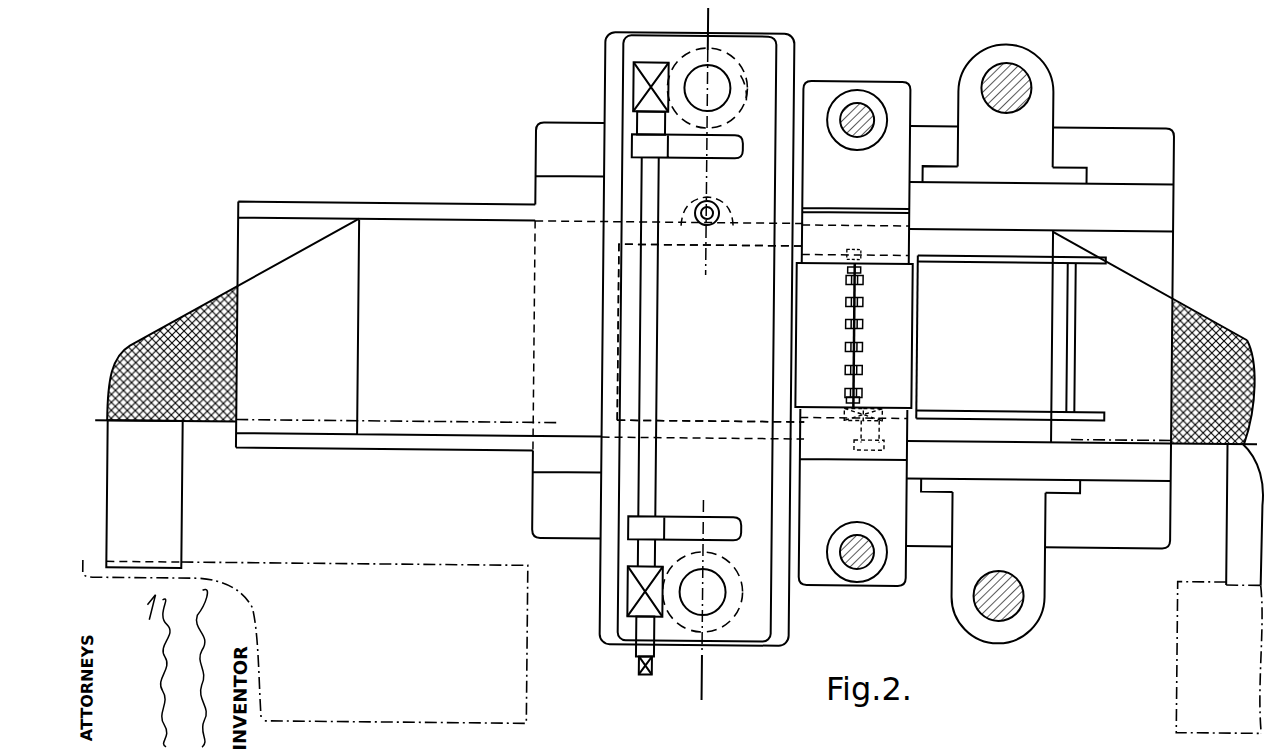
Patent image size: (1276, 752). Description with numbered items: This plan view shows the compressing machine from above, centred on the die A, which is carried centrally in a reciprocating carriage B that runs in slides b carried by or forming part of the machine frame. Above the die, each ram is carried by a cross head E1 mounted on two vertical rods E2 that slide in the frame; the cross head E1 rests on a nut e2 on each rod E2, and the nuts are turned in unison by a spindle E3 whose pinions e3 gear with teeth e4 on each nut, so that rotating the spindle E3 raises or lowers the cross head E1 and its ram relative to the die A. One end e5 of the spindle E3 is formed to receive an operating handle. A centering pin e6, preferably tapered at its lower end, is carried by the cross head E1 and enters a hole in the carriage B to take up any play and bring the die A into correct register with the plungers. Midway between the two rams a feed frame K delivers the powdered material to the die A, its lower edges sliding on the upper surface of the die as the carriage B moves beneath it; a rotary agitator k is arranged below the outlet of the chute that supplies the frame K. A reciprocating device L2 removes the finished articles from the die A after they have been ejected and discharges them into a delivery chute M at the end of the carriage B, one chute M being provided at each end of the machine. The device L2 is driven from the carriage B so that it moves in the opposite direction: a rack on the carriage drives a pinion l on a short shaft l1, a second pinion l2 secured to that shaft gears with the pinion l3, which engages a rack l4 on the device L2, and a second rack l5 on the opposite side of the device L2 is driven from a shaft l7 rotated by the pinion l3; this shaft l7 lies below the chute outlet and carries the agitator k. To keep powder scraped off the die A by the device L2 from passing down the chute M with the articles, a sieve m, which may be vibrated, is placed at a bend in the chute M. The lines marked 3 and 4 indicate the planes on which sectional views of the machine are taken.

The cross head E1 is at (780, 626).
The vertical rods E2 is at (1000, 590).
The spindle E3 is at (645, 638).
The nut e2 is at (734, 74).
The pinions e3 is at (630, 592).
The teeth e4 is at (742, 104).
The end of spindle e5 is at (657, 667).
The centering pin e6 is at (711, 211).
The die A is at (694, 419).
The carriage B is at (433, 438).
The slides b is at (541, 454).
The sieve m is at (1231, 345).
The delivery chute M is at (684, 576).
The feed frame K is at (915, 348).
The rotary agitator k is at (862, 300).
The pinion l is at (855, 445).
The short shaft l1 is at (854, 254).
The link l2 is at (875, 412).
The pinion l3 is at (845, 408).
The rack l4 is at (922, 412).
The second rack l5 is at (925, 258).
The shaft l7 is at (853, 333).
The reciprocating device L2 is at (1075, 338).
The section line 3 is at (716, 355).
The section line 4 is at (674, 430).